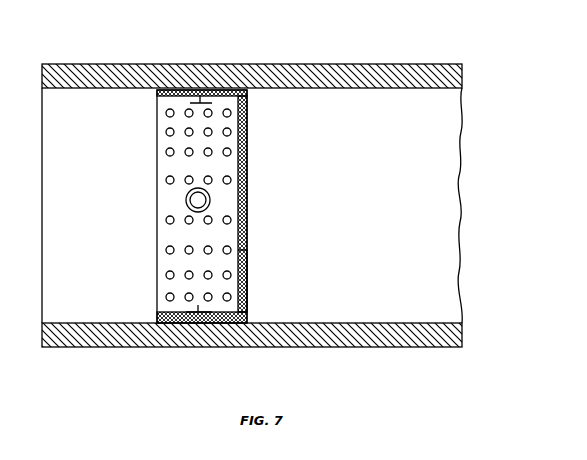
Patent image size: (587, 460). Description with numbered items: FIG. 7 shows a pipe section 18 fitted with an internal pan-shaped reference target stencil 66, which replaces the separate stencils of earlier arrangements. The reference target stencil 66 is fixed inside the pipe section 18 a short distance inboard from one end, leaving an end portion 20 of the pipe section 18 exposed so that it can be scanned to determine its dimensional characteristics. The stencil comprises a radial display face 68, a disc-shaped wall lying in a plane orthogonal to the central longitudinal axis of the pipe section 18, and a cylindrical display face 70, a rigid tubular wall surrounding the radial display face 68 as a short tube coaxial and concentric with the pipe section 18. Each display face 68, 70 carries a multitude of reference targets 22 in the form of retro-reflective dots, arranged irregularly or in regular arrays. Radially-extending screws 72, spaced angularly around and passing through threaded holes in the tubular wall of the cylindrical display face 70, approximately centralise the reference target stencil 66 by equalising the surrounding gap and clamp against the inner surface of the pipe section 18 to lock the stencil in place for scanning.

The pipe section 18 is at (470, 311).
The end portion 20 is at (62, 64).
The reference targets 22 is at (248, 122).
The reference target stencil 66 is at (255, 224).
The radial display face 68 is at (248, 257).
The cylindrical display face 70 is at (157, 199).
The screws 72 is at (200, 96).